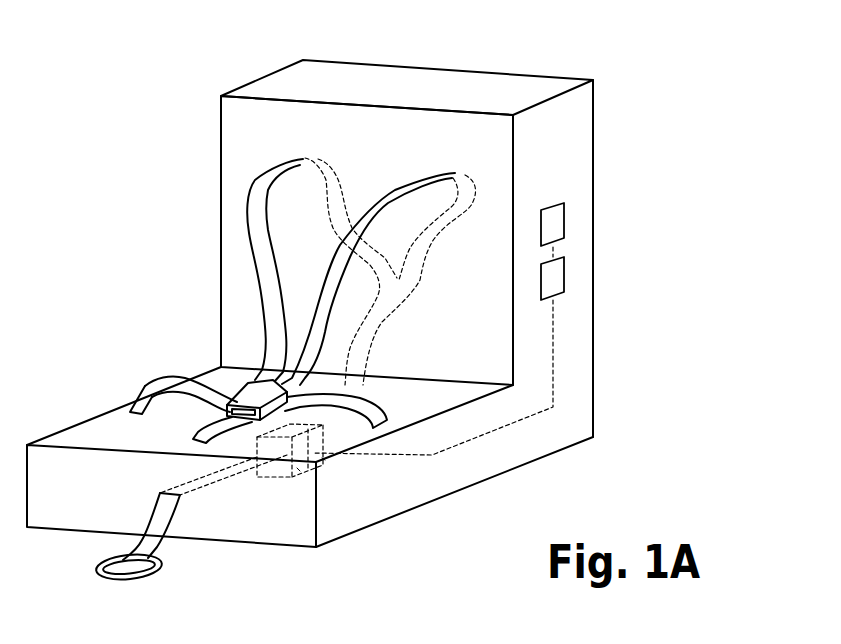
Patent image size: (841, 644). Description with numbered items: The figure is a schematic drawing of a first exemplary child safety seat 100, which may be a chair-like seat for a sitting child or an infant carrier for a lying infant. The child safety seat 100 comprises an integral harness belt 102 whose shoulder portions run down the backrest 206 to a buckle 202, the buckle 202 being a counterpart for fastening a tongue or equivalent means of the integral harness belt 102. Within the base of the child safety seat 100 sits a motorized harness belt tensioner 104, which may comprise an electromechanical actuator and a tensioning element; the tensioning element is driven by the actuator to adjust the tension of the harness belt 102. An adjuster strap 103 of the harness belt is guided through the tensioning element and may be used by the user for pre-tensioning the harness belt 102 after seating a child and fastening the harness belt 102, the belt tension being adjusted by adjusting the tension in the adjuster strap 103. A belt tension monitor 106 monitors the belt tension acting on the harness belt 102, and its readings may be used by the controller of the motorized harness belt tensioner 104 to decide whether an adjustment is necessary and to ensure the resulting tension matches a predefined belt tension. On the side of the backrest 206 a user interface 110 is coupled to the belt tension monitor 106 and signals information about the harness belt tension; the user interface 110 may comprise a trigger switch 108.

The child safety seat 100 is at (372, 305).
The integral harness belt 102 is at (258, 231).
The adjuster strap 103 is at (168, 545).
The motorized harness belt tensioner 104 is at (297, 468).
The belt tension monitor 106 is at (322, 458).
The trigger switch 108 is at (557, 278).
The user interface 110 is at (557, 224).
The buckle 202 is at (235, 386).
The backrest 206 is at (382, 152).